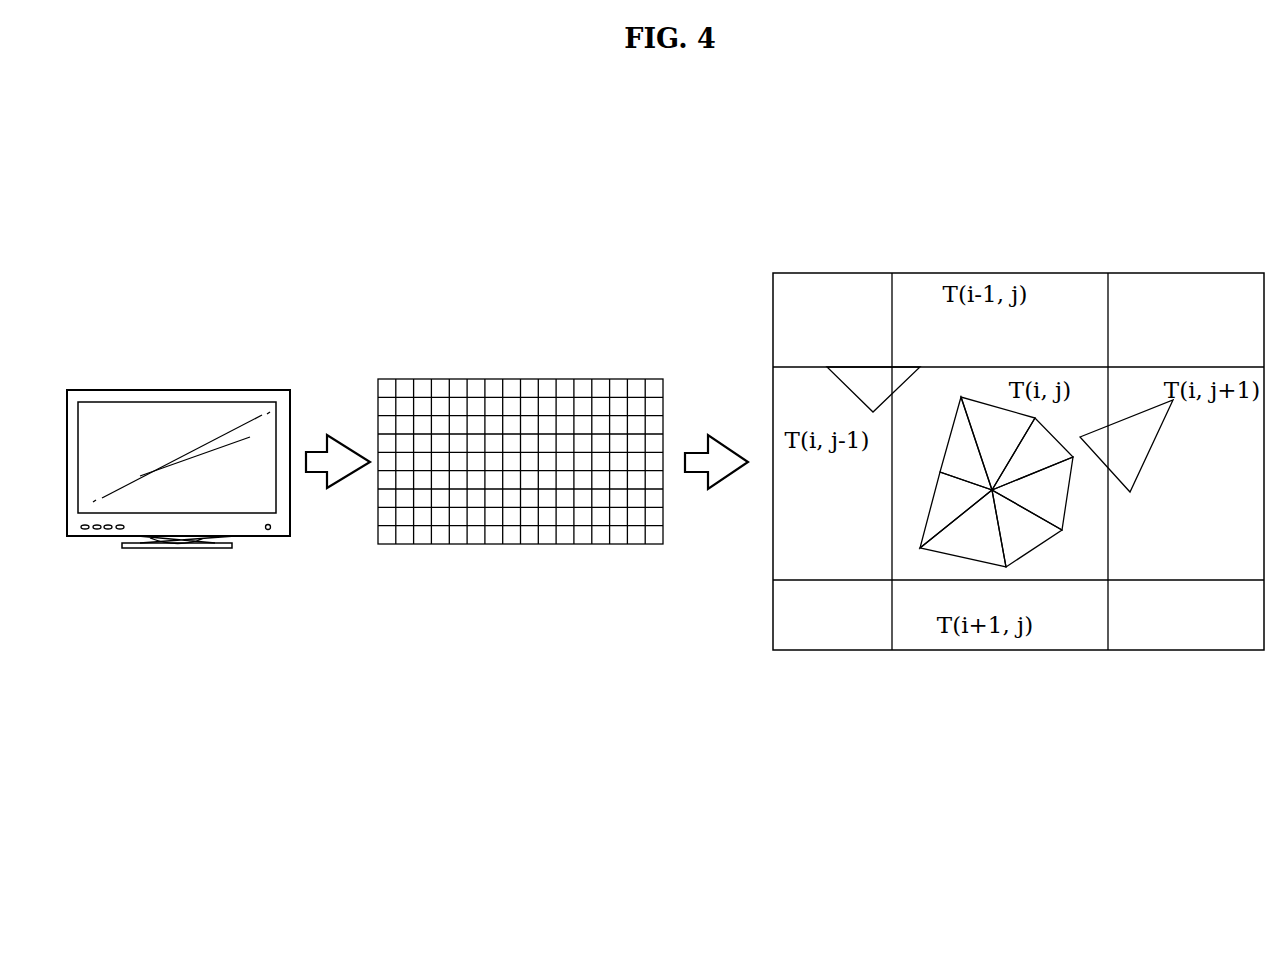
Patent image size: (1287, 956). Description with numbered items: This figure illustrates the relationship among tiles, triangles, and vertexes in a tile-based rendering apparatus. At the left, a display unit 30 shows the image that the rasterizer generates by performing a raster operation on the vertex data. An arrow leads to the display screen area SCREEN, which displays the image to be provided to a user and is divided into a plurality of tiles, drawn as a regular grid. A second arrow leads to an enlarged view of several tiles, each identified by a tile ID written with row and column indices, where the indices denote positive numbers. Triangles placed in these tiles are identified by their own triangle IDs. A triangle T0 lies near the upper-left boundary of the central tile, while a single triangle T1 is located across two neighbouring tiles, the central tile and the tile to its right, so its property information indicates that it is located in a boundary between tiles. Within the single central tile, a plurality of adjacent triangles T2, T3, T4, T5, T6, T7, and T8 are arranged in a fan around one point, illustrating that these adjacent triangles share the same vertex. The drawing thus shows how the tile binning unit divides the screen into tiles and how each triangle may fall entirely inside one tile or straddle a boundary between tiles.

The display unit 30 is at (176, 390).
The display screen area SCREEN is at (519, 379).
The triangle T0 is at (873, 389).
The triangle T1 is at (1126, 446).
The triangle T2 is at (1032, 454).
The triangle T3 is at (998, 443).
The triangle T4 is at (966, 443).
The triangle T5 is at (956, 510).
The triangle T6 is at (963, 528).
The triangle T7 is at (1027, 528).
The triangle T8 is at (1032, 493).